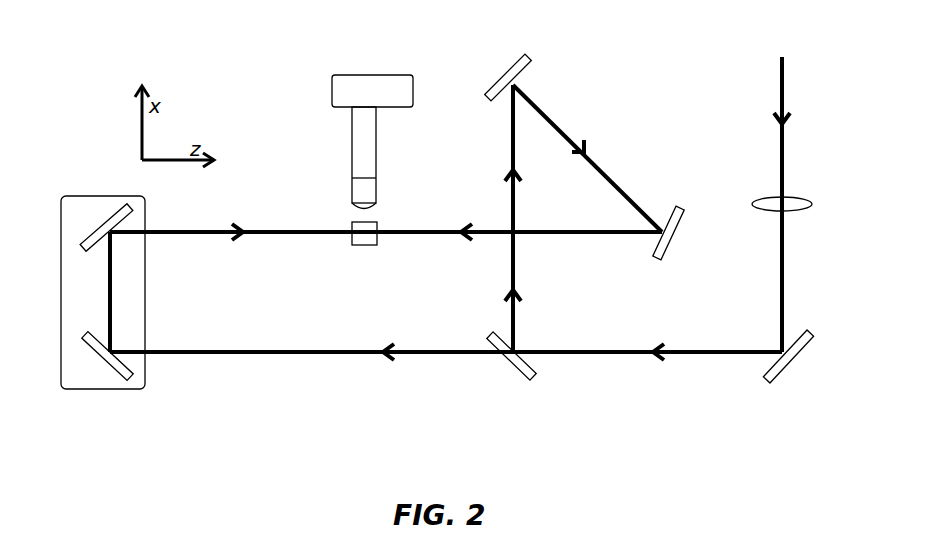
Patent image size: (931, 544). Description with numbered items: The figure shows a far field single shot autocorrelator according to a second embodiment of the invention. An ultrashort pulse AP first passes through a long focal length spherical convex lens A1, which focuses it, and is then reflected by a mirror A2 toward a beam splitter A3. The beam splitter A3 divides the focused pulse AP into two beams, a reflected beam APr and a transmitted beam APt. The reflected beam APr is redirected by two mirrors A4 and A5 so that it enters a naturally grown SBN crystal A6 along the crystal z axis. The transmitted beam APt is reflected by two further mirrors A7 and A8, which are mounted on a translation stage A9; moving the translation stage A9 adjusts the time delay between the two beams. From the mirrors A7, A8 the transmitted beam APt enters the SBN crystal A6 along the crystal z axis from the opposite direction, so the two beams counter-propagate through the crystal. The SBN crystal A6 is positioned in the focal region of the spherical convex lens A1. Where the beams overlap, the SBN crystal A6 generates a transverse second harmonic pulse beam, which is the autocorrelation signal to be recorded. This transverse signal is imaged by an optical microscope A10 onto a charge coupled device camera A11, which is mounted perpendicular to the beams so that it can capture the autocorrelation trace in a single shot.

The ultrashort pulse AP is at (467, 208).
The reflected beam APr is at (531, 311).
The transmitted beam APt is at (436, 367).
The long focal length spherical convex lens A1 is at (799, 207).
The mirror A2 is at (801, 356).
The beam splitter A3 is at (528, 361).
The mirror A4 is at (497, 75).
The mirror A5 is at (678, 239).
The naturally grown SBN crystal A6 is at (365, 252).
The mirror A7 is at (99, 358).
The mirror A8 is at (99, 227).
The translation stage A9 is at (84, 292).
The optical microscope A10 is at (332, 158).
The charge coupled device (CCD) camera A11 is at (343, 93).